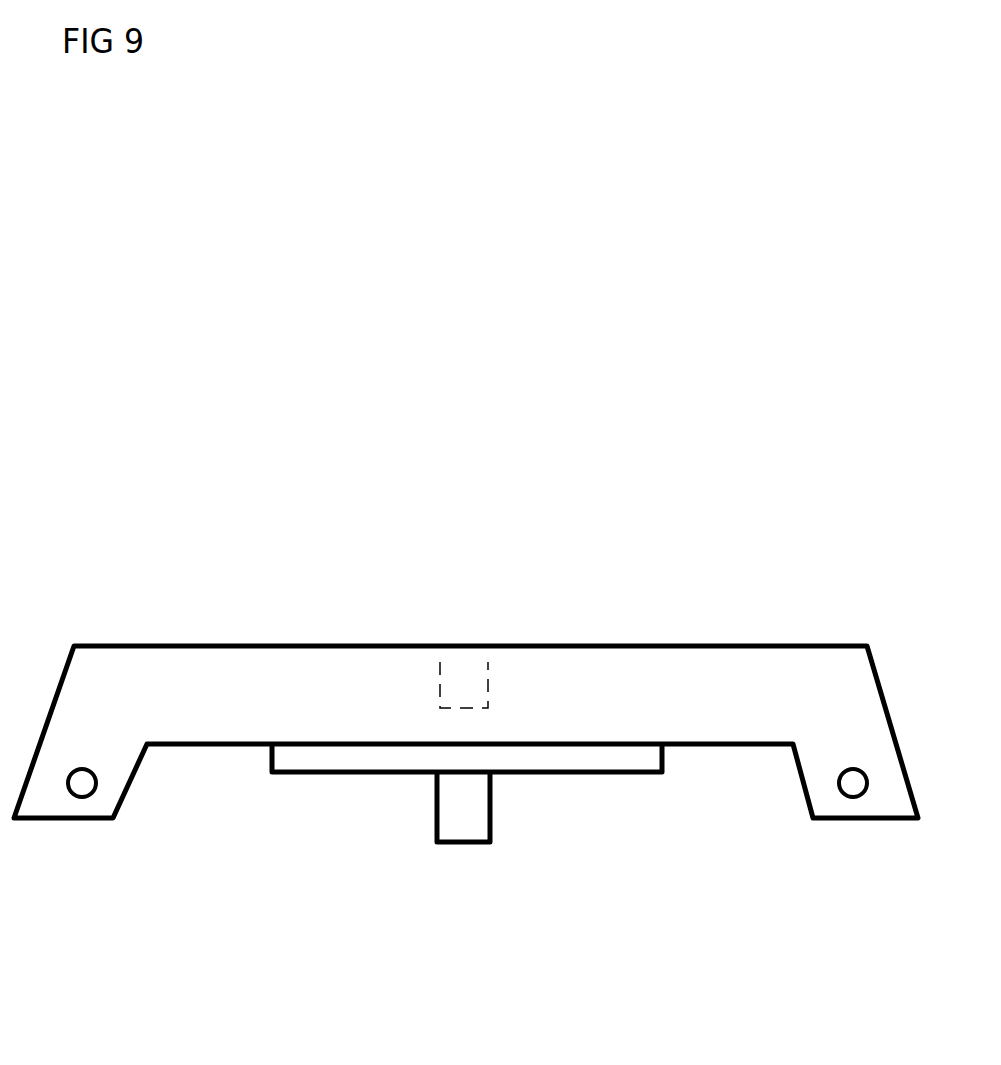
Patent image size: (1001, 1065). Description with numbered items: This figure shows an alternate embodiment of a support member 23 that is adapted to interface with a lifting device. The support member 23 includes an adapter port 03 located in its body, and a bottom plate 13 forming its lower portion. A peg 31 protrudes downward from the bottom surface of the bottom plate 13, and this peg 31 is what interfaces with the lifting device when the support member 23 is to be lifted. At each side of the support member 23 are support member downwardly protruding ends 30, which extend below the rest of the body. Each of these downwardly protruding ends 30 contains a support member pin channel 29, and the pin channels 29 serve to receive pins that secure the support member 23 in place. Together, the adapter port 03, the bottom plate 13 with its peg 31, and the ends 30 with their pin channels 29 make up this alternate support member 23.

The support member 23 is at (330, 647).
The bottom plate 13 is at (387, 773).
The peg 31 is at (492, 827).
The adapter port 03 is at (460, 673).
The support member pin channels 29 is at (80, 780).
The support member downwardly protruding ends 30 is at (797, 777).